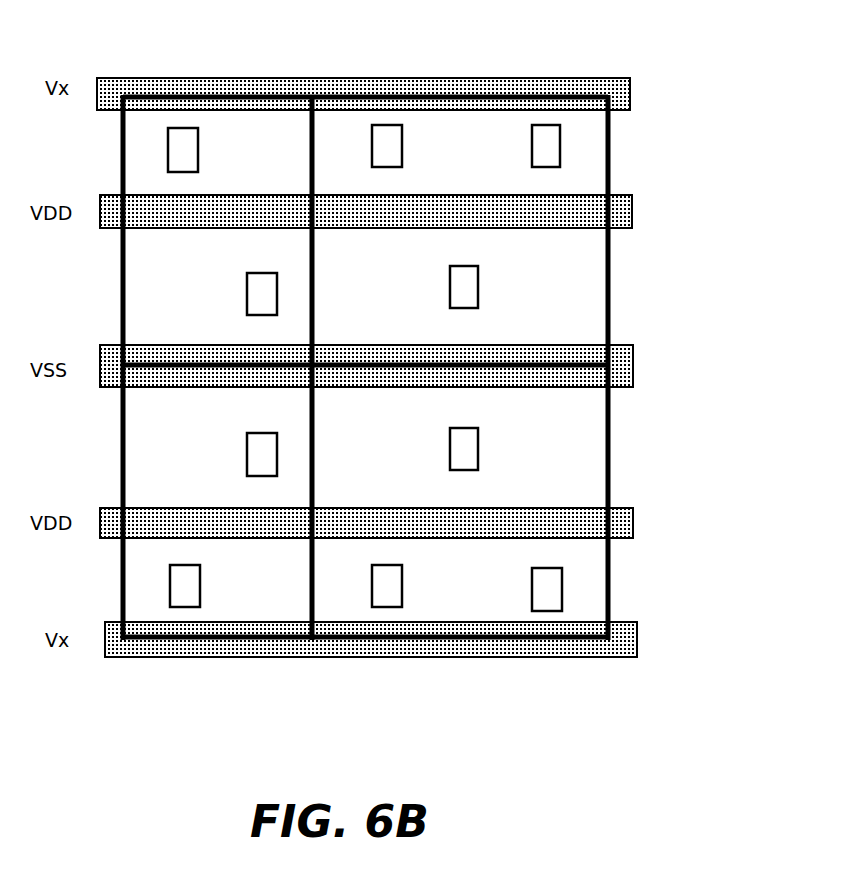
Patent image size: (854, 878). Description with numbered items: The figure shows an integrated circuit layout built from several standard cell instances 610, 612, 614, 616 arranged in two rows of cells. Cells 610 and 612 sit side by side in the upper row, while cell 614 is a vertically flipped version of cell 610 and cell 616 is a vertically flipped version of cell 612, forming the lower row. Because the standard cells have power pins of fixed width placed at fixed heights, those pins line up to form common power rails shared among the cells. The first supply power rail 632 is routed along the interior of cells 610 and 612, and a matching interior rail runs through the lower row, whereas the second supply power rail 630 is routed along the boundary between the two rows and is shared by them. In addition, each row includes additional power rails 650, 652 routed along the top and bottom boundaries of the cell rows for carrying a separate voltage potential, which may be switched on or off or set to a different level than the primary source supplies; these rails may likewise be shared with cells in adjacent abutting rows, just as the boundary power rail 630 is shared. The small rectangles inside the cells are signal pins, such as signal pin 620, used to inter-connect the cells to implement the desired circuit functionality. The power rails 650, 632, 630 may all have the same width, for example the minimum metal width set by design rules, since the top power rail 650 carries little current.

The Vx power rail 650 is at (632, 78).
The VDD power rail 632 is at (637, 213).
The VSS power rail 630 is at (635, 373).
The Vx power rail 652 is at (637, 647).
The signal pin 620 is at (393, 126).
The standard cell instance 610 is at (264, 241).
The standard cell instance 612 is at (510, 243).
The standard cell instance 614 is at (264, 526).
The standard cell instance 616 is at (508, 524).